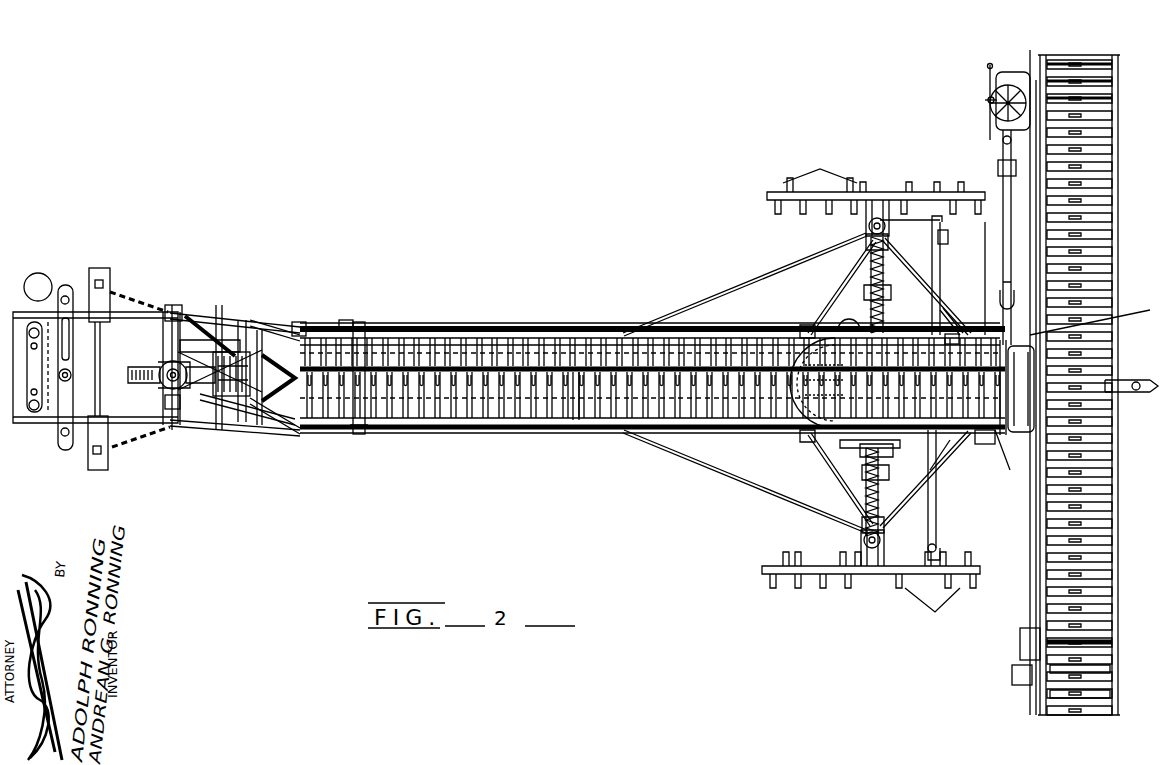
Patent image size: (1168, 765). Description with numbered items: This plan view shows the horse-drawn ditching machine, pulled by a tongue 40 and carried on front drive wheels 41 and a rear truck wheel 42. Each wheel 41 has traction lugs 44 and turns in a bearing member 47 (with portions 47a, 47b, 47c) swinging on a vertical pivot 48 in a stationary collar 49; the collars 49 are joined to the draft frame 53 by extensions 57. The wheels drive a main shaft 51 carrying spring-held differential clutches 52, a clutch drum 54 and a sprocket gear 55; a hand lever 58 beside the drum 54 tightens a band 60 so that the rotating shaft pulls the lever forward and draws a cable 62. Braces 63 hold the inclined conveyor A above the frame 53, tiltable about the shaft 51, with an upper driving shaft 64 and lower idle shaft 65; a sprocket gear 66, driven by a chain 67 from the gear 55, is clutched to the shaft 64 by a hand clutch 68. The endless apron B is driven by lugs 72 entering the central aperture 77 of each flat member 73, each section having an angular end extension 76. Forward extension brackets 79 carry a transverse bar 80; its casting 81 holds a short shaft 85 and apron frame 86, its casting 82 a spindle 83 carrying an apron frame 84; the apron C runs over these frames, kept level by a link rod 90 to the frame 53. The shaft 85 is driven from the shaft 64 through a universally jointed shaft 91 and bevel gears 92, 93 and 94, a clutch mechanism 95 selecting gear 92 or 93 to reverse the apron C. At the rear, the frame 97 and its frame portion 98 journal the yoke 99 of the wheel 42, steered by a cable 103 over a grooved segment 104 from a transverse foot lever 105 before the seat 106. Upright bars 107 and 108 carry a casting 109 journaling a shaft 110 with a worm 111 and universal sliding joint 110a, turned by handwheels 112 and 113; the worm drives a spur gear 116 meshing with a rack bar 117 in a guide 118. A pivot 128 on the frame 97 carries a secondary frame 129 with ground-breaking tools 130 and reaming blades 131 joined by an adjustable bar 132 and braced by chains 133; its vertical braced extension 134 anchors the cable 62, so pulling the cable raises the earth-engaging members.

The tongue 40 is at (1152, 394).
The front drive wheels 41 is at (893, 192).
The rear truck wheel 42 is at (178, 390).
The wheel lugs 44 is at (820, 172).
The bearing member 47 is at (877, 200).
The frame member 47a is at (932, 228).
The bracket 47b is at (948, 240).
The lower frame member 47c is at (940, 498).
The vertical pivot 48 is at (868, 226).
The stationary collar 49 is at (866, 240).
The main shaft 51 is at (884, 290).
The differential clutches 52 is at (864, 292).
The draft frame 53 is at (806, 331).
The clutch drum 54 is at (942, 290).
The sprocket gear 55 is at (893, 450).
The extensions 57 is at (846, 274).
The hand lever 58 is at (948, 336).
The band 60 is at (849, 319).
The cable 62 is at (556, 328).
The braces 63 is at (750, 294).
The upper driving shaft 64 is at (1097, 318).
The lower idle shaft 65 is at (345, 321).
The sprocket gear 66 is at (1004, 436).
The chain 67 is at (985, 445).
The hand clutch 68 is at (1000, 472).
The lugs 72 is at (300, 430).
The flat member 73 is at (405, 422).
The angular end extension 76 is at (486, 372).
The central aperture 77 is at (480, 376).
The extension brackets 79 is at (1092, 343).
The carrier supporting bar 80 is at (1030, 520).
The casting 81 is at (1016, 72).
The casting 82 is at (1020, 642).
The spindle 83 is at (1012, 673).
The circular apron frame 84 is at (1090, 648).
The short shaft 85 is at (1033, 78).
The apron frame 86 is at (1080, 66).
The link rod 90 is at (980, 330).
The universally jointed shaft 91 is at (1012, 222).
The bevel gear 92 is at (990, 114).
The bevel gear 93 is at (988, 84).
The bevel gear 94 is at (1006, 85).
The clutch mechanism 95 is at (988, 100).
The frame 97 is at (220, 306).
The frame portion 98 is at (166, 402).
The yoke 99 is at (1014, 295).
The cable 103 is at (362, 435).
The grooved segment 104 is at (160, 370).
The foot lever 105 is at (950, 318).
The seat 106 is at (798, 418).
The upright bars 107 is at (248, 332).
The upright bars 108 is at (188, 316).
The casting 109 is at (226, 322).
The shaft 110 is at (576, 421).
The universal sliding joint 110a is at (278, 428).
The worm 111 is at (275, 328).
The handwheel 112 is at (200, 346).
The handwheel 113 is at (866, 450).
The spur gear 116 is at (262, 420).
The rack bar 117 is at (300, 326).
The guide 118 is at (279, 384).
The pivot 128 is at (172, 428).
The secondary frame 129 is at (128, 424).
The ground-breaking tools 130 is at (50, 320).
The reaming blades 131 is at (102, 268).
The adjustable bar 132 is at (108, 300).
The chains 133 is at (136, 300).
The vertical braced extension 134 is at (175, 306).
The conveyor A is at (540, 383).
The apron B is at (462, 352).
The apron C is at (1112, 512).